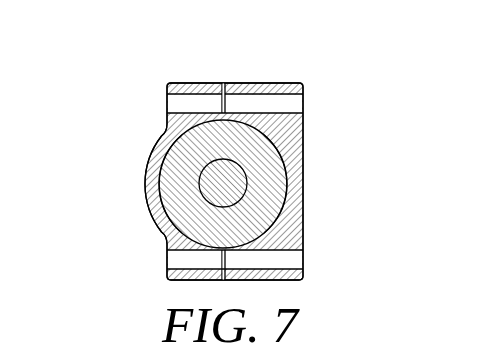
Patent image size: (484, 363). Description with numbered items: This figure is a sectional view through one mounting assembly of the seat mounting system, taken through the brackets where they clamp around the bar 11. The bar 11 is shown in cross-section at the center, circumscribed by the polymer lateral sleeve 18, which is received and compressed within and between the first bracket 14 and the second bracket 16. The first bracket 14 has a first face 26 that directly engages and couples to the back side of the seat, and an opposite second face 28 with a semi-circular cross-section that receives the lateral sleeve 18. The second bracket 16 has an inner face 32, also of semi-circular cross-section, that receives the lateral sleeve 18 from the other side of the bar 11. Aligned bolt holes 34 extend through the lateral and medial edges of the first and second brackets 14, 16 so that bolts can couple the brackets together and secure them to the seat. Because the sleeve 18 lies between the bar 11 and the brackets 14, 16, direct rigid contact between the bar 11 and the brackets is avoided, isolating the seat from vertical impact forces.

The bar 11 is at (213, 190).
The first bracket 14 is at (253, 83).
The second bracket 16 is at (200, 83).
The lateral sleeve 18 is at (262, 207).
The first face 26 is at (303, 137).
The second face 28 is at (283, 184).
The inner face 32 is at (178, 150).
The bolt holes 34 is at (185, 98).